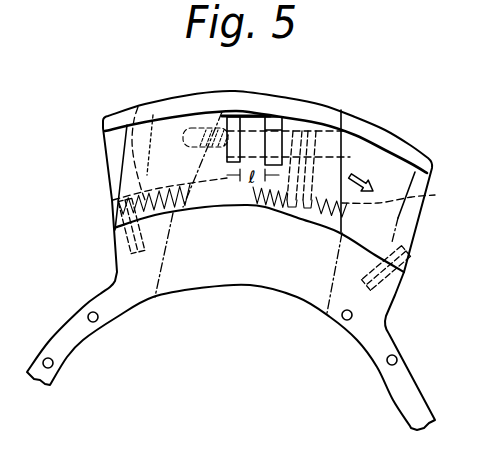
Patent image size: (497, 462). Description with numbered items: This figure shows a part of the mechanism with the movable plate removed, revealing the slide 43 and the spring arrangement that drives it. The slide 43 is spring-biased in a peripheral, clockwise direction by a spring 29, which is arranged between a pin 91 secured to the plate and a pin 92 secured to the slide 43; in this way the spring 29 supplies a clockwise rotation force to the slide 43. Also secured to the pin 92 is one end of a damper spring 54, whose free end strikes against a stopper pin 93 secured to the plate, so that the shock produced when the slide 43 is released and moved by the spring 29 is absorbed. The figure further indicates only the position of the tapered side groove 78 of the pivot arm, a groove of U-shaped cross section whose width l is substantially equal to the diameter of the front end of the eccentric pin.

The spring 29 is at (139, 107).
The tapered side groove 78 is at (274, 118).
The pin 92 is at (312, 131).
The slide 43 is at (346, 176).
The damper spring 54 is at (427, 198).
The pin 91 is at (126, 243).
The stopper pin 93 is at (407, 262).